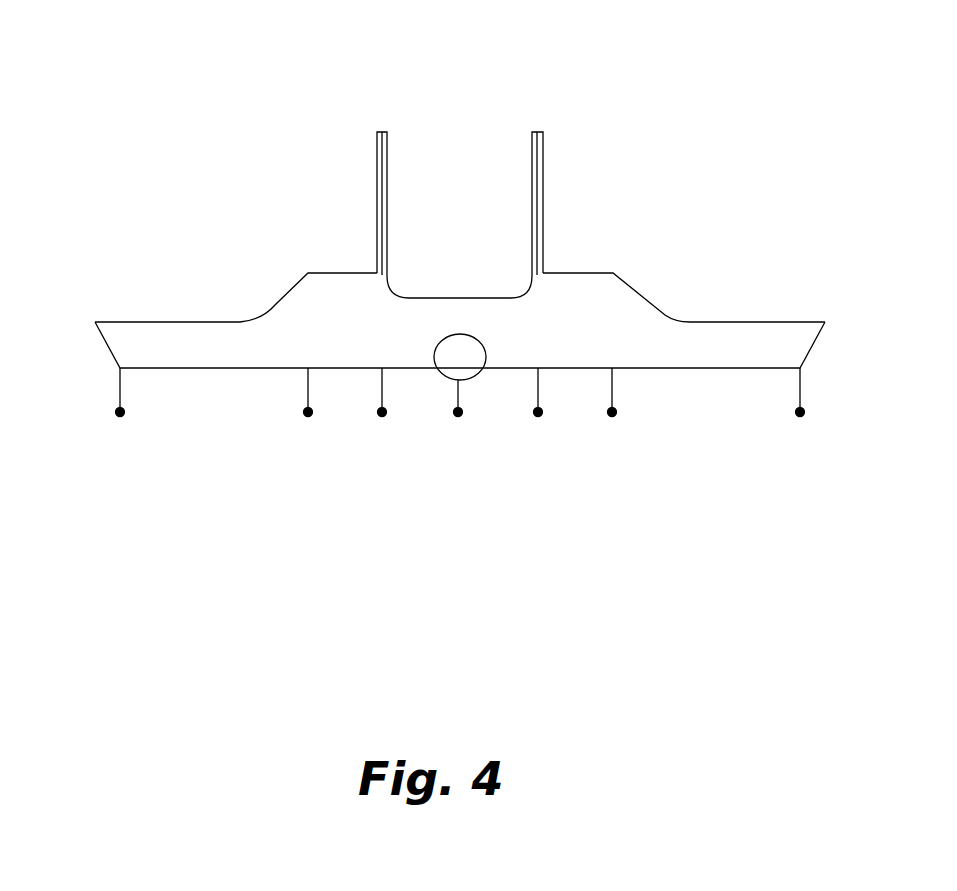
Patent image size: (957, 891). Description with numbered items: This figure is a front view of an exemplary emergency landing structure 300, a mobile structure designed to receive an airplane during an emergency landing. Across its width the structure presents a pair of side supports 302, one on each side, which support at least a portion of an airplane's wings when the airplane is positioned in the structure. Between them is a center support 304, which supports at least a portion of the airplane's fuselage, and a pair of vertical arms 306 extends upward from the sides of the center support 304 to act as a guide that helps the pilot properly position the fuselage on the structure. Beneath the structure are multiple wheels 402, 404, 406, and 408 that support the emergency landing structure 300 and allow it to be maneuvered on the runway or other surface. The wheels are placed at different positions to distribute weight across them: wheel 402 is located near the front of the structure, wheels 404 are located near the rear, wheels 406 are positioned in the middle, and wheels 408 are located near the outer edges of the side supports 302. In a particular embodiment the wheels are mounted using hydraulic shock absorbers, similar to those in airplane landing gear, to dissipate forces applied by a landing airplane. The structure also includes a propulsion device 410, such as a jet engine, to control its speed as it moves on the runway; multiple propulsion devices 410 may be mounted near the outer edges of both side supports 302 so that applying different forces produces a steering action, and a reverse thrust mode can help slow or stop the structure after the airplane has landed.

The emergency landing structure 300 is at (428, 70).
The side supports 302 is at (180, 322).
The center support 304 is at (430, 297).
The vertical arms 306 is at (381, 160).
The wheel 402 is at (458, 412).
The wheels 404 is at (382, 412).
The wheels 406 is at (308, 412).
The wheels 408 is at (120, 412).
The propulsion device 410 is at (457, 350).